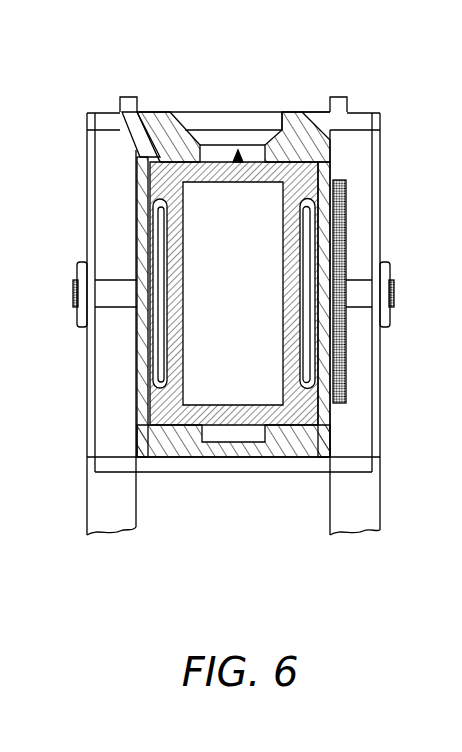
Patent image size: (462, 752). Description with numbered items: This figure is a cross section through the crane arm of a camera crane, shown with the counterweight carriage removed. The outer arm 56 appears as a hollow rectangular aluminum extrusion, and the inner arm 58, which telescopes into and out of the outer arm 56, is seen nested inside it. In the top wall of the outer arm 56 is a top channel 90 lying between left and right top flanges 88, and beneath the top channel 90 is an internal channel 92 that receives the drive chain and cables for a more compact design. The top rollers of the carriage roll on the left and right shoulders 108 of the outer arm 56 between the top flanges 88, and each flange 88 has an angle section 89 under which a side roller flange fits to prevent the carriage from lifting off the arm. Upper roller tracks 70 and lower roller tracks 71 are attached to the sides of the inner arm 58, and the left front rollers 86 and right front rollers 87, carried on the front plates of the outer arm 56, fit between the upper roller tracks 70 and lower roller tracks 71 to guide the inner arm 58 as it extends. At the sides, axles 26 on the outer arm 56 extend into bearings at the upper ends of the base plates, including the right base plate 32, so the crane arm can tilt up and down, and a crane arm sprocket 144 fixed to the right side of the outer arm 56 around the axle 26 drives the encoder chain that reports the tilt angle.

The axles 26 is at (103, 280).
The right base plate 32 is at (103, 503).
The outer arm 56 is at (320, 108).
The inner arm 58 is at (213, 163).
The upper roller tracks 70 is at (330, 173).
The lower roller tracks 71 is at (152, 393).
The left front rollers 86 is at (160, 308).
The right front rollers 87 is at (308, 333).
The top flanges 88 is at (127, 110).
The angle section 89 is at (130, 125).
The top channel 90 is at (208, 108).
The internal channel 92 is at (240, 165).
The shoulders 108 is at (170, 112).
The crane arm sprocket 144 is at (346, 372).